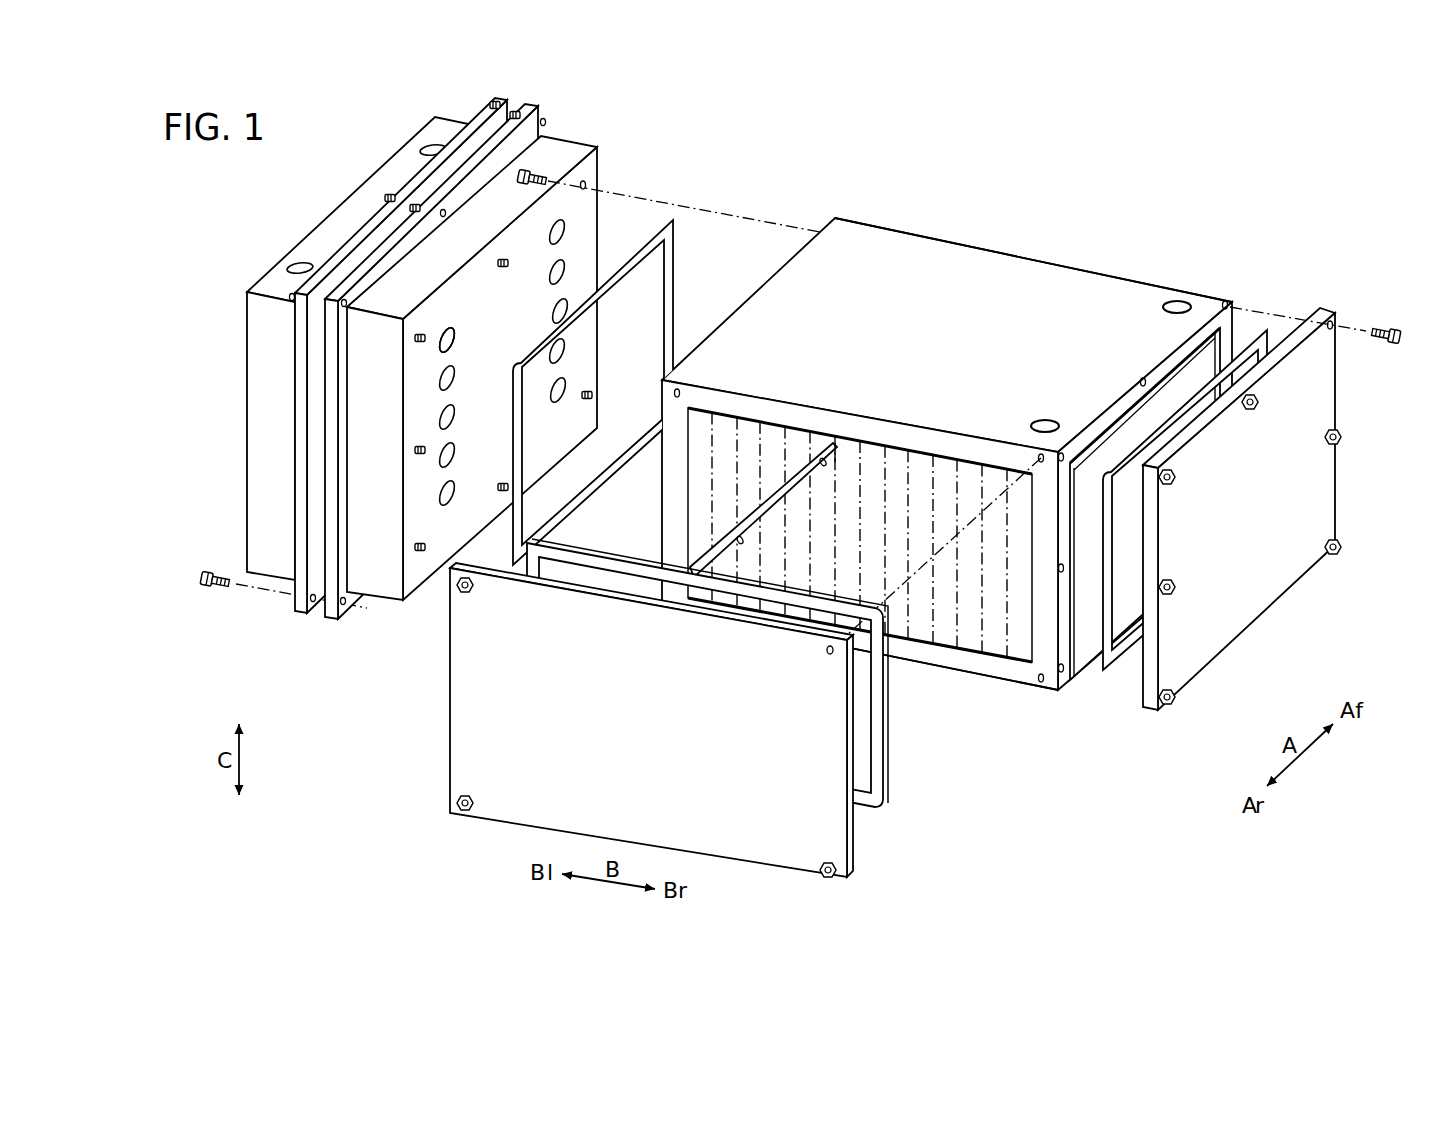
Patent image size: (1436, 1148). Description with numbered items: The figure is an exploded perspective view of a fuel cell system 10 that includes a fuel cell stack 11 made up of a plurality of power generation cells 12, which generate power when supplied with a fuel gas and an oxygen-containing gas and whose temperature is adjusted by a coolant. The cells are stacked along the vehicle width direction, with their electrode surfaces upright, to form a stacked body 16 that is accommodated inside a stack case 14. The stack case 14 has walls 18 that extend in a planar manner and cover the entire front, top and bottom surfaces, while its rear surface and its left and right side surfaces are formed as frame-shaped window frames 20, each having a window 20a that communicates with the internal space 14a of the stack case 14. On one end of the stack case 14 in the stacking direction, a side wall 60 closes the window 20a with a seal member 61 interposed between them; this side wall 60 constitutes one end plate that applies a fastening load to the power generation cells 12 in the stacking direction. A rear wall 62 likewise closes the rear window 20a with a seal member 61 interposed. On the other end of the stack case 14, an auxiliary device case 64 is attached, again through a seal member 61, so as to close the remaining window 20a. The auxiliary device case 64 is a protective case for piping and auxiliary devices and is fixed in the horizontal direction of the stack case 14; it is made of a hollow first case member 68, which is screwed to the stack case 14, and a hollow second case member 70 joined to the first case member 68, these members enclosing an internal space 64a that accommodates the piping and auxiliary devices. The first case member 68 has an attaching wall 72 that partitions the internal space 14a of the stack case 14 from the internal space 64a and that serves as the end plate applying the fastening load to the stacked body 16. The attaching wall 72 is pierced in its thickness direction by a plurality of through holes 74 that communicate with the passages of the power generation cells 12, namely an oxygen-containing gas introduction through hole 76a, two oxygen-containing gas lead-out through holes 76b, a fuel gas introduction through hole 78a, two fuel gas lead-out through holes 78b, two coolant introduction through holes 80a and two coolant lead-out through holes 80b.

The fuel cell system 10 is at (1067, 186).
The fuel cell stack 11 is at (968, 662).
The power generation cells 12 is at (922, 462).
The stack case 14 is at (942, 467).
The internal space of the stack case 14a is at (915, 260).
The stacked body 16 is at (947, 634).
The walls 18 is at (870, 257).
The window frames 20 is at (1160, 368).
The window 20a is at (1118, 432).
The side wall 60 is at (1260, 588).
The seal member 61 is at (670, 266).
The rear wall 62 is at (477, 760).
The auxiliary device case 64 is at (410, 412).
The internal space of the auxiliary device case 64a is at (264, 476).
The first case member 68 is at (467, 395).
The second case member 70 is at (330, 405).
The attaching wall 72 is at (580, 176).
The through holes 74 is at (446, 322).
The oxygen-containing gas introduction through hole 76a is at (440, 423).
The oxygen-containing gas lead-out through holes 76b is at (567, 230).
The fuel gas introduction through hole 78a is at (565, 308).
The fuel gas lead-out through holes 78b is at (440, 347).
The coolant introduction through holes 80a is at (440, 385).
The coolant lead-out through holes 80b is at (553, 267).